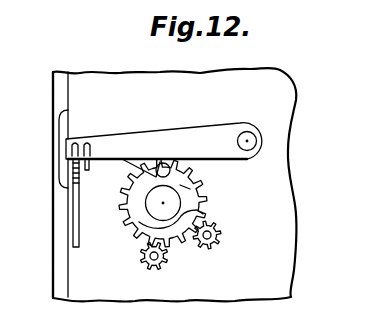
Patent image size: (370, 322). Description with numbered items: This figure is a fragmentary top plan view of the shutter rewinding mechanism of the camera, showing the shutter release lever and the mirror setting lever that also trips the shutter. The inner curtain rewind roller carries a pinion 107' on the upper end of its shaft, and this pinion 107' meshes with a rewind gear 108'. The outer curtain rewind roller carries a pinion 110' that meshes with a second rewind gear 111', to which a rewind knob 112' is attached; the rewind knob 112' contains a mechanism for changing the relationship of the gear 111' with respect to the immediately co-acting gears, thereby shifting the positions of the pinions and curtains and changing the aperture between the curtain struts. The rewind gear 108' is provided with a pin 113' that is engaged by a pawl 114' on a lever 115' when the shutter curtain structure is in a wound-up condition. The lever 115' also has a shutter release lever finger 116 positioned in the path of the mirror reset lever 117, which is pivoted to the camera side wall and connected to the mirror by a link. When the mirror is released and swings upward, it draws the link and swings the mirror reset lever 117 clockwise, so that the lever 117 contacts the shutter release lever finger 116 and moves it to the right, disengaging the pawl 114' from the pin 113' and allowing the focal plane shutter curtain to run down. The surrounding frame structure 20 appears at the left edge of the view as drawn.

The housing frame 20 is at (58, 234).
The pinion 107' is at (176, 264).
The rewind gear 108' is at (148, 212).
The pinion 110' is at (233, 235).
The rewind gear 111' is at (202, 216).
The rewind knob 112' is at (214, 185).
The pin 113' is at (184, 139).
The pawl 114' is at (146, 142).
The lever 115' is at (247, 118).
The shutter release lever finger 116 is at (104, 146).
The mirror reset lever 117 is at (71, 181).